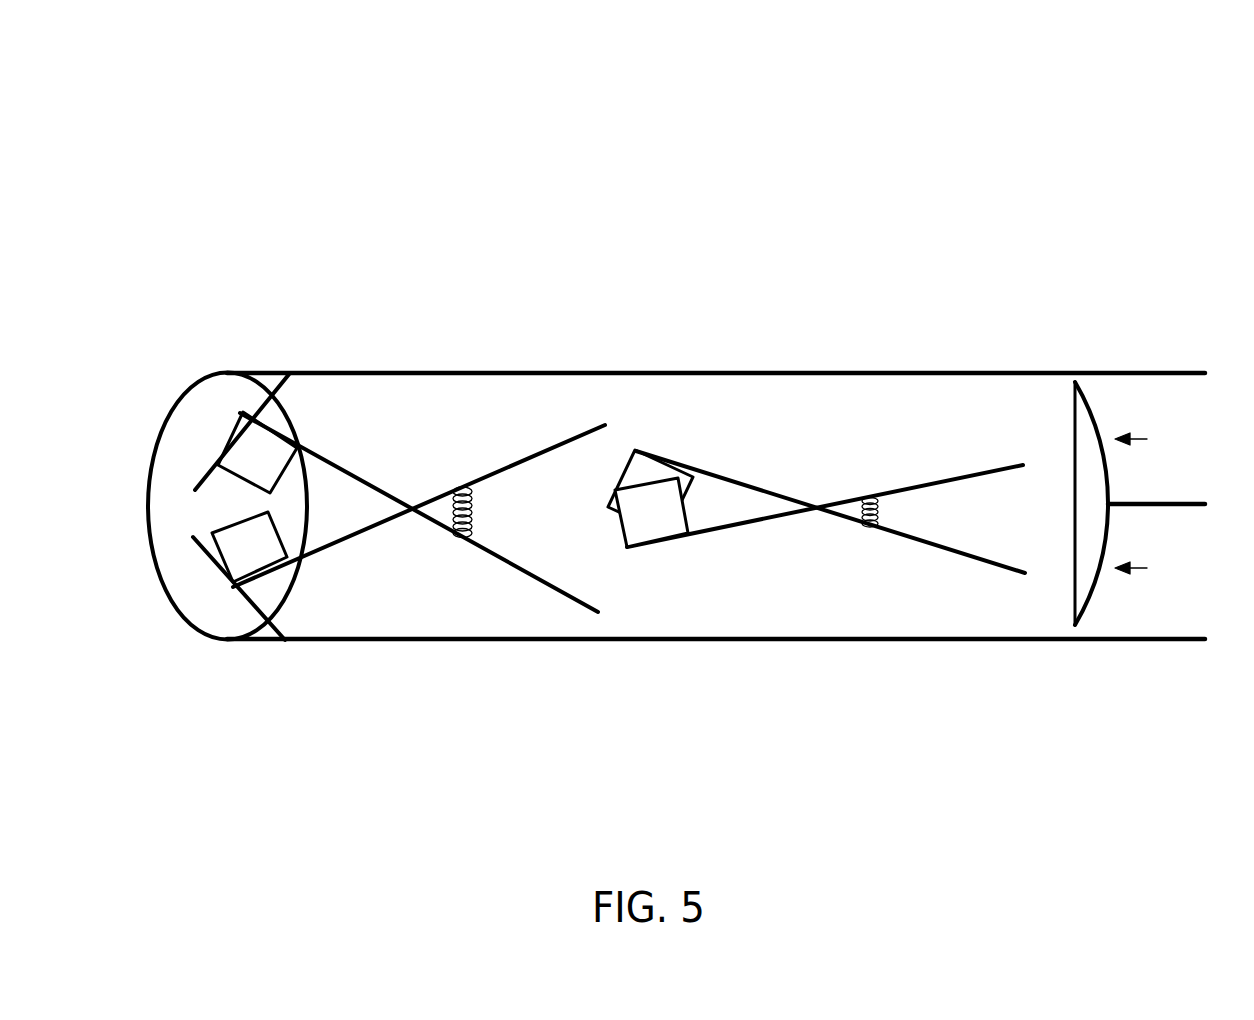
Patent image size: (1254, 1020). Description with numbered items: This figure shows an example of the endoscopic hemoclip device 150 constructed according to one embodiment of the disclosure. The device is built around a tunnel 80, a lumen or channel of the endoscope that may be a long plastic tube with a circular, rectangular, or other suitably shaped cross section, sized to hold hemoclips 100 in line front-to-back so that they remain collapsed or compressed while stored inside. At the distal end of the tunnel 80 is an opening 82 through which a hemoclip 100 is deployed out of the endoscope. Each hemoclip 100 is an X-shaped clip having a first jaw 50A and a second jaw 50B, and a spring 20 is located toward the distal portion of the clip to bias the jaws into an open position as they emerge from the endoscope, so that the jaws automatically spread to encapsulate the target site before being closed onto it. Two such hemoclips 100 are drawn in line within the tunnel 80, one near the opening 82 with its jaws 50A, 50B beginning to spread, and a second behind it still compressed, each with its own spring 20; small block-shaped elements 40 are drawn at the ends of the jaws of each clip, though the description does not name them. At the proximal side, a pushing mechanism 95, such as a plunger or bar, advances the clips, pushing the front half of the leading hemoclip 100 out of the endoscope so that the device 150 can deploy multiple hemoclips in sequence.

The endoscopic hemoclip device 150 is at (741, 69).
The tunnel 80 is at (312, 372).
The opening 82 is at (156, 450).
The mirror 40 is at (263, 450).
The hemoclip 100 is at (629, 500).
The first jaw 50A is at (396, 498).
The second jaw 50B is at (393, 518).
The spring 20 is at (473, 510).
The pushing mechanism 95 is at (1163, 498).